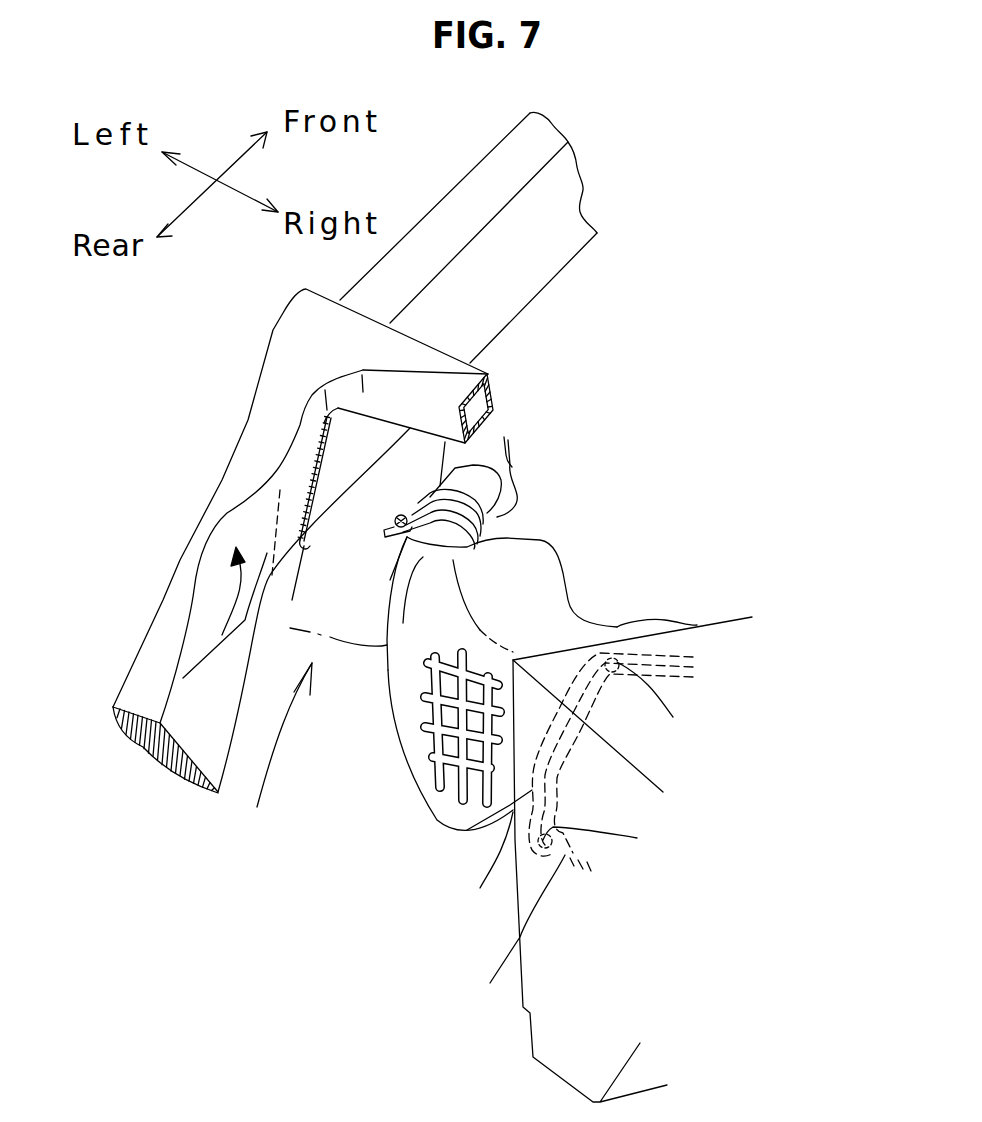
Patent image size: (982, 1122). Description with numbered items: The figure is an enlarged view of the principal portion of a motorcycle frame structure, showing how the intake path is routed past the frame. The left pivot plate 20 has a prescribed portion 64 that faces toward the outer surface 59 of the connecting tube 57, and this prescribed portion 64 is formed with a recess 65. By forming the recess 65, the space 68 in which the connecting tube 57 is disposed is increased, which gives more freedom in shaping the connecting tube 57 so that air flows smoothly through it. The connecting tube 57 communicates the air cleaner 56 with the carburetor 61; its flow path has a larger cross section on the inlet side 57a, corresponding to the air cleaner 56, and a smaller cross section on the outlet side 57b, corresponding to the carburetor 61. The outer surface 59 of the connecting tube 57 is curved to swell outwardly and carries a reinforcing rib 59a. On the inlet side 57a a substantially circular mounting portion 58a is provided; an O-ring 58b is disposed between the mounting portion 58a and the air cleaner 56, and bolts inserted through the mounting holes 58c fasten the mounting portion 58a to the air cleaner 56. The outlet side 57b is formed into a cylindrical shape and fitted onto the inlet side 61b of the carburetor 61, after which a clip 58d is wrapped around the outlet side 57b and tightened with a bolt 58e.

The left pivot plate 20 is at (255, 416).
The air cleaner 56 is at (543, 1028).
The connecting tube 57 is at (553, 587).
The inlet side 57a is at (627, 620).
The outlet side 57b is at (397, 573).
The mounting portion 58a is at (480, 888).
The O-ring 58b is at (490, 983).
The mounting holes 58c is at (673, 717).
The clip 58d is at (452, 512).
The bolt 58e is at (402, 515).
The outer surface 59 is at (405, 660).
The reinforcing rib 59a is at (432, 753).
The carburetor 61 is at (508, 480).
The inlet side of the carburetor 61b is at (517, 513).
The prescribed portion 64 is at (195, 612).
The recess 65 is at (218, 565).
The space 68 is at (268, 754).